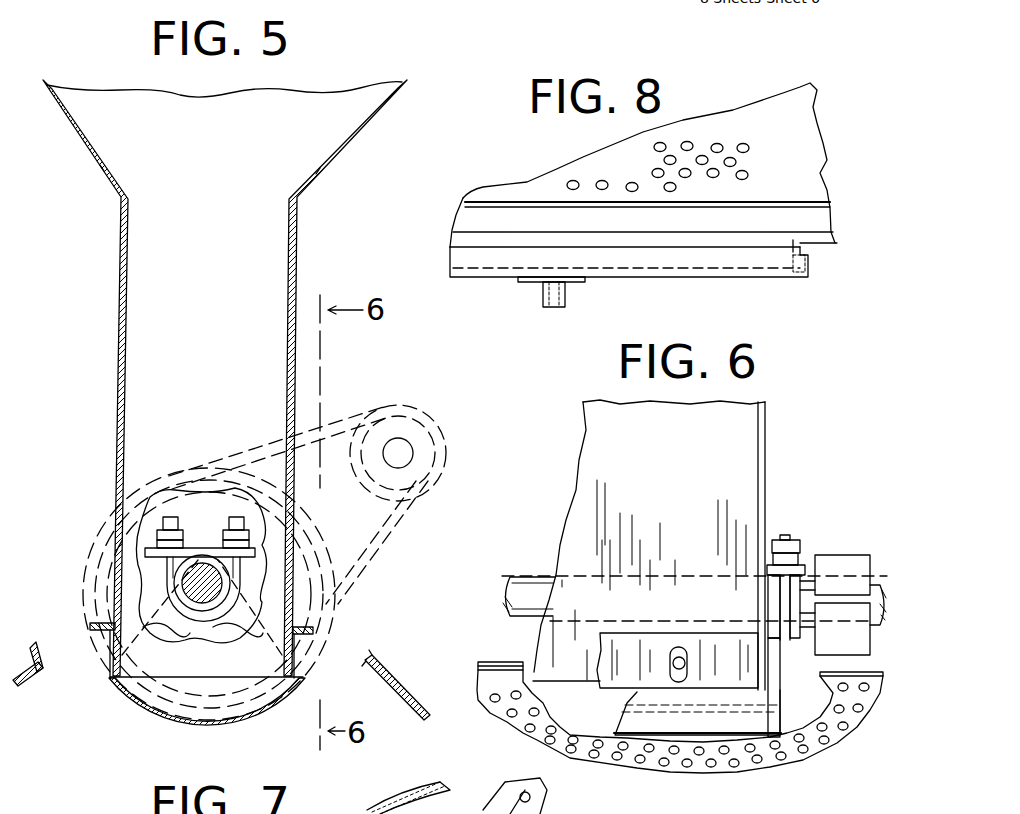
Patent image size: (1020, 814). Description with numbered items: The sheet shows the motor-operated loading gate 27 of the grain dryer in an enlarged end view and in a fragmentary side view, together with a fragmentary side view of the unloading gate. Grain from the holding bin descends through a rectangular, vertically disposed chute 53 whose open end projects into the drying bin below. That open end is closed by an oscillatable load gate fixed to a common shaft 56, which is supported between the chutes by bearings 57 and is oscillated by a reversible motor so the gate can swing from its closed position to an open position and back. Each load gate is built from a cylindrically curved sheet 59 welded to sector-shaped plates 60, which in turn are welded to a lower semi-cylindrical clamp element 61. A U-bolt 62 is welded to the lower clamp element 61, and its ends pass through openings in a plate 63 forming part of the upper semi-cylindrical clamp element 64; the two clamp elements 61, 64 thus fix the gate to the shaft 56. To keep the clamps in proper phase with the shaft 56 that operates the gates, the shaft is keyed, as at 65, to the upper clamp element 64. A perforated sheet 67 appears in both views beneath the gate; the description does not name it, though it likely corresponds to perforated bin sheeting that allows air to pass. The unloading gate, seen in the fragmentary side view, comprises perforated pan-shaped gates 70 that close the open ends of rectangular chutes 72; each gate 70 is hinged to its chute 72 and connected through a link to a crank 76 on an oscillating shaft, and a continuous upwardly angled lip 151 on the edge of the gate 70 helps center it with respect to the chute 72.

In FIG. 5, the motor-operated loading gate 27 is at (137, 716).
In FIG. 5, the chute 53 is at (296, 272).
In FIG. 6, the chute 53 is at (730, 443).
In FIG. 5, the shaft 56 is at (187, 593).
In FIG. 6, the shaft 56 is at (520, 588).
In FIG. 6, the bearing 57 is at (850, 562).
In FIG. 5, the cylindrically curved sheet 59 is at (183, 721).
In FIG. 6, the cylindrically curved sheet 59 is at (700, 735).
In FIG. 6, the sector-shaped plate 60 is at (773, 727).
In FIG. 5, the lower semi-cylindrical clamp element 61 is at (187, 620).
In FIG. 6, the lower semi-cylindrical clamp element 61 is at (768, 615).
In FIG. 5, the U-bolt 62 is at (213, 627).
In FIG. 6, the U-bolt 62 is at (786, 535).
In FIG. 5, the plate 63 is at (200, 573).
In FIG. 6, the plate 63 is at (767, 570).
In FIG. 5, the upper semi-cylindrical clamp element 64 is at (172, 571).
In FIG. 6, the upper semi-cylindrical clamp element 64 is at (773, 590).
In FIG. 5, the key 65 is at (175, 595).
In FIG. 5, the perforated shield 67 is at (402, 688).
In FIG. 8, the perforated shield 67 is at (805, 160).
In FIG. 6, the perforated shield 67 is at (777, 767).
In FIG. 8, the perforated pan-shaped gate 70 is at (717, 273).
In FIG. 8, the rectangular chute 72 is at (507, 242).
In FIG. 7, the crank 76 is at (483, 810).
In FIG. 8, the upwardly angled lip 151 is at (637, 262).